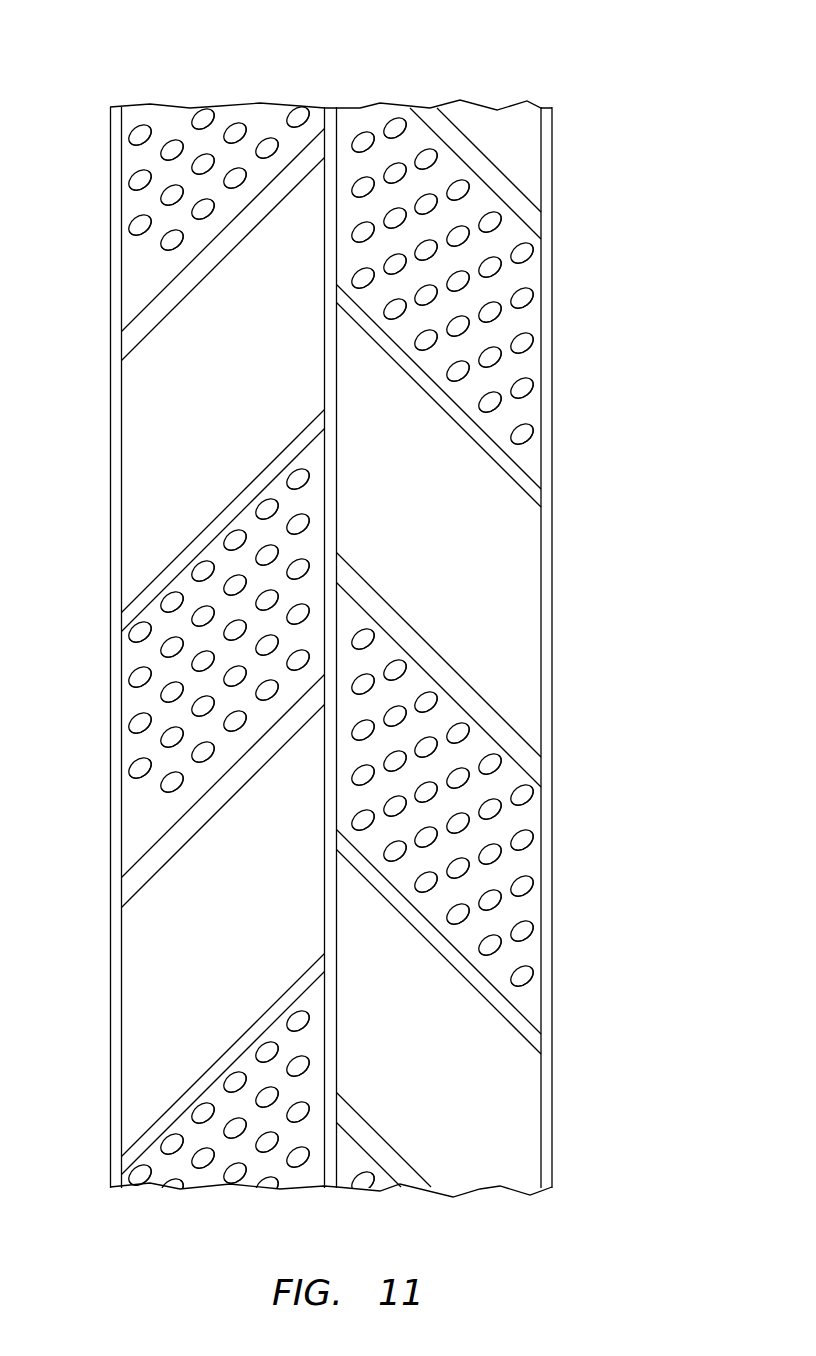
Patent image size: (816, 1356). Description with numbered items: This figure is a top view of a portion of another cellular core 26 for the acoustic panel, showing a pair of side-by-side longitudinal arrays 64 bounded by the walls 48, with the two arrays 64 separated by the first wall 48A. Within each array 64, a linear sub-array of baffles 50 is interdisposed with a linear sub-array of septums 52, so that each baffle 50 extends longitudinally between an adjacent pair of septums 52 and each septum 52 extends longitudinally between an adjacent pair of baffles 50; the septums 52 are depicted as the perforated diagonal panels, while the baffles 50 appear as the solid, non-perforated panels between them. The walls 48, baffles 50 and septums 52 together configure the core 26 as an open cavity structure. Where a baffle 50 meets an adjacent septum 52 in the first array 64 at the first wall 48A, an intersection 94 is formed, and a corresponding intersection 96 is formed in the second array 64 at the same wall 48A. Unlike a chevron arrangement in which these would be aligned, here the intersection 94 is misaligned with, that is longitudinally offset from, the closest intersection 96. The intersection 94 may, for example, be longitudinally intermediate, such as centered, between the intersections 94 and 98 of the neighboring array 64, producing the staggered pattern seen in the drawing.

The cellular core 26 is at (372, 636).
The walls 48 is at (112, 107).
The first wall 48A is at (331, 107).
The baffles 50 is at (497, 130).
The septums 52 is at (143, 270).
The arrays 64 is at (226, 88).
The intersection 94 is at (140, 603).
The intersection 96 is at (518, 478).
The intersection 98 is at (135, 330).